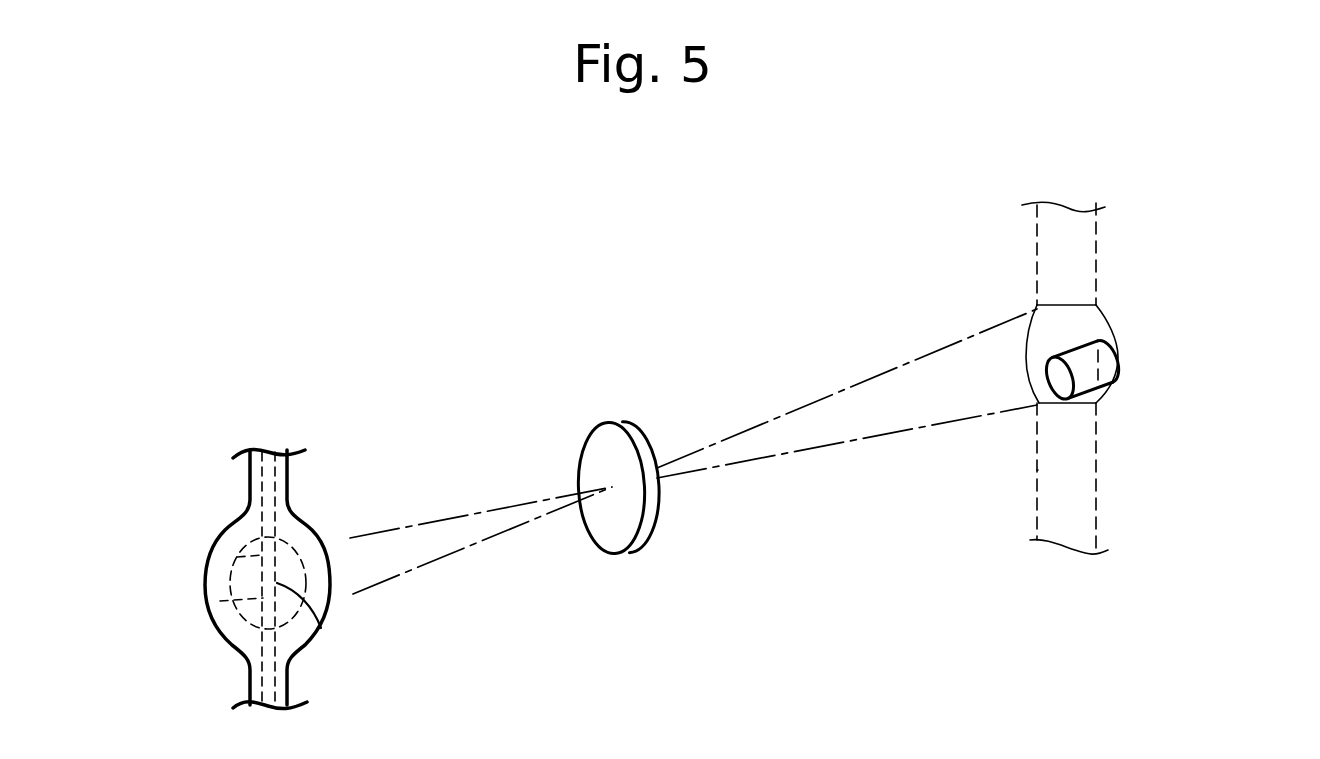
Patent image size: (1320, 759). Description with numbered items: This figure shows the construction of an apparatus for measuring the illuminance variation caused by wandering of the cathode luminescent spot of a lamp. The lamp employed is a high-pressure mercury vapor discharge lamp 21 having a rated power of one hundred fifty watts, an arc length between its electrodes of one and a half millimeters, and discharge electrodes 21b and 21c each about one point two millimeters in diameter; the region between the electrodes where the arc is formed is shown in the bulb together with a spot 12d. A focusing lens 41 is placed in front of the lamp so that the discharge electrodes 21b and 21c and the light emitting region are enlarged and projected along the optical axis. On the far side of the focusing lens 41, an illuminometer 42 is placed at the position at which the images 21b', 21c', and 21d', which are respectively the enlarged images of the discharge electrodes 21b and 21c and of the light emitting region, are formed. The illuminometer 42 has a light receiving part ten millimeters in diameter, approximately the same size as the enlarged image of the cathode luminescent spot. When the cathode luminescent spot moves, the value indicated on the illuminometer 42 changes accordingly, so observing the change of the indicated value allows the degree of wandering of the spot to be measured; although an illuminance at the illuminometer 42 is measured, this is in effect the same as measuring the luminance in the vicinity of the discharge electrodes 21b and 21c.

The high-pressure mercury vapor discharge lamp 21 is at (176, 462).
The discharge electrode 21b is at (218, 542).
The discharge electrode 21c is at (208, 612).
The light source spot 12d is at (321, 628).
The focusing lens 41 is at (610, 421).
The image of discharge electrode 21b' is at (1140, 355).
The image of light emitting region 21d' is at (1156, 321).
The illuminometer 42 is at (1120, 360).
The image of discharge electrode 21c' is at (1156, 451).